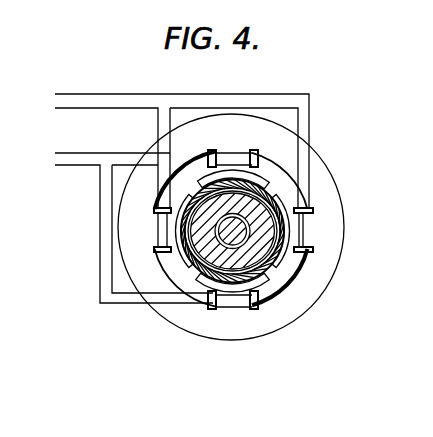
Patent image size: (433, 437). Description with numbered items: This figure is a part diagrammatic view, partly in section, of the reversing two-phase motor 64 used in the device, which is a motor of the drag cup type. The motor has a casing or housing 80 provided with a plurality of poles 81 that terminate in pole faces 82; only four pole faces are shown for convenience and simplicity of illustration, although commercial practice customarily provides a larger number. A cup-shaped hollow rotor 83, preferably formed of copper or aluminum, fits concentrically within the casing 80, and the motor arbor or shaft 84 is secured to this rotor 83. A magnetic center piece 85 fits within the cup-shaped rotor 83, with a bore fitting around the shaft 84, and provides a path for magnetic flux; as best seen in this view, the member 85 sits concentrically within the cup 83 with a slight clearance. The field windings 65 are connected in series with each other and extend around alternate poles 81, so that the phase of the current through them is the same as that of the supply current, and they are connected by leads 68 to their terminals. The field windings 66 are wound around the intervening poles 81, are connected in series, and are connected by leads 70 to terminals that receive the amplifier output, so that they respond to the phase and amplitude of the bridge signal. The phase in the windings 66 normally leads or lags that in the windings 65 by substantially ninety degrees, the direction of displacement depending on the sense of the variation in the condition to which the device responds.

The motor 64 is at (349, 163).
The field winding 65 is at (230, 150).
The field winding 66 is at (158, 228).
The leads 68 is at (67, 156).
The leads 70 is at (96, 107).
The casing 80 is at (309, 292).
The poles 81 is at (310, 240).
The pole faces 82 is at (258, 169).
The cup-shaped hollow rotor 83 is at (264, 268).
The motor arbor or shaft 84 is at (186, 258).
The magnetic center piece 85 is at (256, 204).